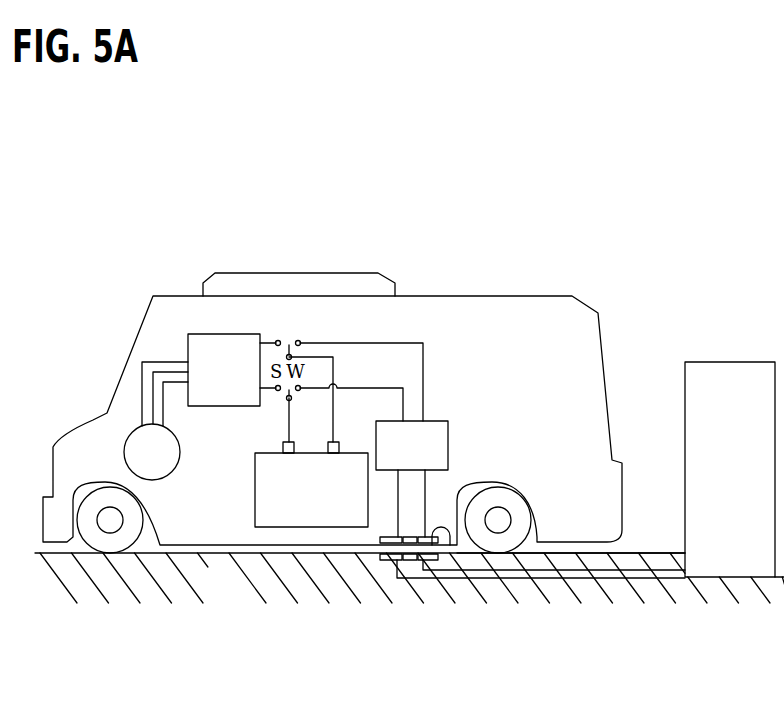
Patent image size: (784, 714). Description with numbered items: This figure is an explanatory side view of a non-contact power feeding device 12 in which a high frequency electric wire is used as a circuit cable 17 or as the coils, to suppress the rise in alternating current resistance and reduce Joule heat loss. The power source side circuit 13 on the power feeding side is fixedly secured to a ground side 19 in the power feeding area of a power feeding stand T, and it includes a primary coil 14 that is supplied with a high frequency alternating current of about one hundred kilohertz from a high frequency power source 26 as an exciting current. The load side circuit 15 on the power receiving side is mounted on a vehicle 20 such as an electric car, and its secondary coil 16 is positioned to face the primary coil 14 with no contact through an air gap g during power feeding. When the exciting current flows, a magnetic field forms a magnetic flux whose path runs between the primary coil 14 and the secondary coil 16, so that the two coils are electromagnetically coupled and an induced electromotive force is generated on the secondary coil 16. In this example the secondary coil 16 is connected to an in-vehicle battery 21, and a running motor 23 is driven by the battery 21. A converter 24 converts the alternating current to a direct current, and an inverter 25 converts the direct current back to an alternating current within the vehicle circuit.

The non-contact power feeding device 12 is at (541, 619).
The power source side circuit 13 is at (540, 665).
The primary coil 14 is at (428, 562).
The load side circuit 15 is at (540, 629).
The secondary coil 16 is at (440, 544).
The circuit cable 17 is at (637, 560).
The ground side 19 is at (235, 612).
The vehicle 20 is at (407, 210).
The in-vehicle battery 21 is at (255, 491).
The running motor 23 is at (176, 434).
The converter 24 is at (448, 447).
The inverter 25 is at (225, 334).
The high frequency power source 26 is at (722, 362).
The power feeding stand T is at (730, 353).
The air gap g is at (368, 552).